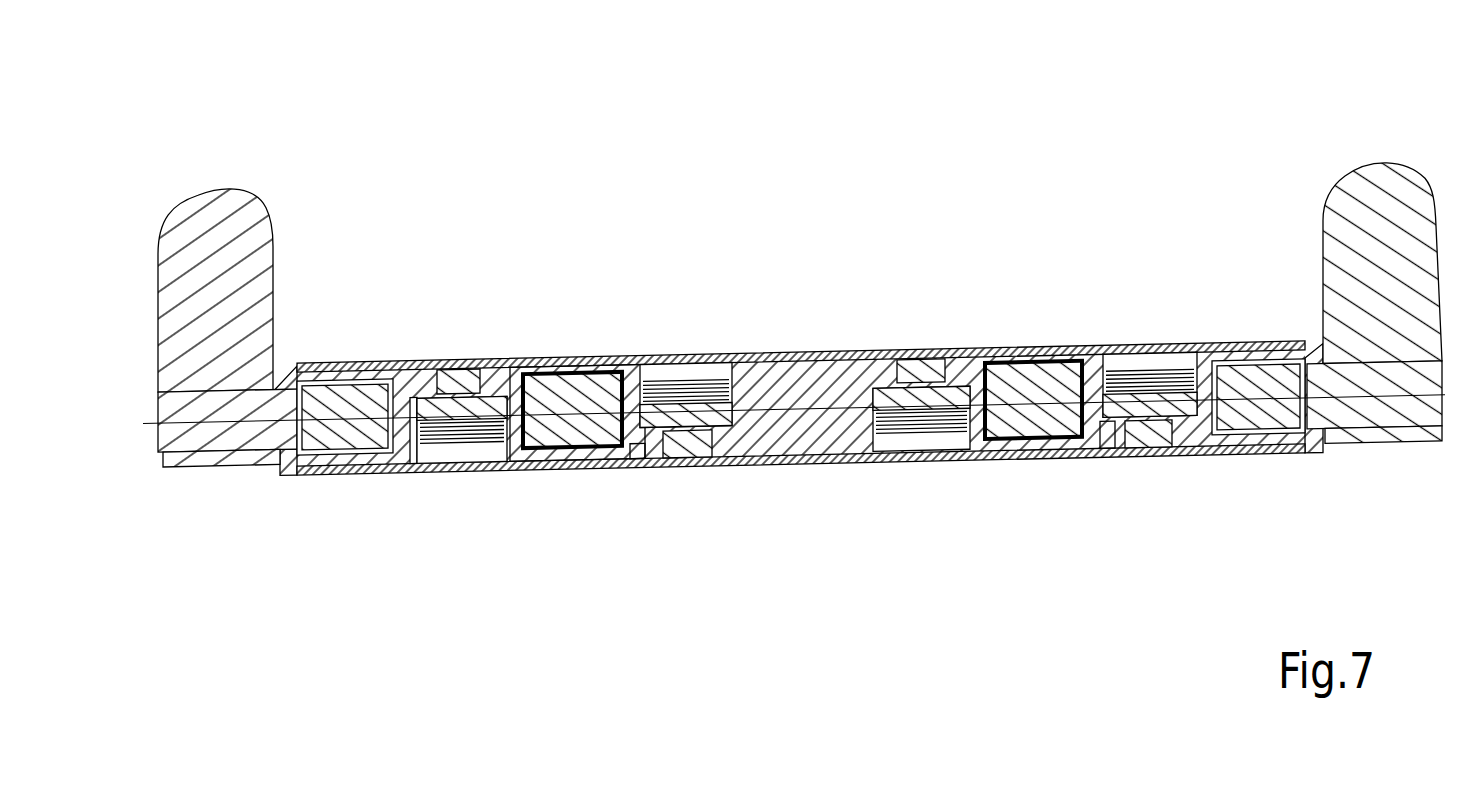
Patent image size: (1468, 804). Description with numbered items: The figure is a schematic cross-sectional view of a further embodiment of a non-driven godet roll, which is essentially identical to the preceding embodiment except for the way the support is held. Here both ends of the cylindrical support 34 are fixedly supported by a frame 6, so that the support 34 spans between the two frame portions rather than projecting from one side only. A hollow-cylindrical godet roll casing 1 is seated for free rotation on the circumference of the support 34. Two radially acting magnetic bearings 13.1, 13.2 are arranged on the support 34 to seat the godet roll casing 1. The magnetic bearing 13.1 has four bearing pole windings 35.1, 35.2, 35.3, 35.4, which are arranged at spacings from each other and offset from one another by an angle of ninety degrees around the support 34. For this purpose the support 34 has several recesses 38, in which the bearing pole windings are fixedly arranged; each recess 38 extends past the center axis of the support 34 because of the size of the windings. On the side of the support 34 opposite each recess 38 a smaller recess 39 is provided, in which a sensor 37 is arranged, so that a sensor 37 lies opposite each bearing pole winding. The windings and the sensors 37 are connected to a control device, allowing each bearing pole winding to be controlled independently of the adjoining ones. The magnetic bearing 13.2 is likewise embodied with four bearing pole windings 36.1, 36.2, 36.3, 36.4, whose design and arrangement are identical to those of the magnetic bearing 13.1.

The godet roll casing 1 is at (763, 460).
The frame 6 is at (240, 210).
The magnetic bearing 13.1 is at (1108, 428).
The magnetic bearing 13.2 is at (638, 445).
The support 34 is at (828, 440).
The bearing pole winding 35.1 is at (920, 443).
The bearing pole winding 35.2 is at (1037, 417).
The bearing pole winding 35.3 is at (1138, 360).
The bearing pole winding 35.4 is at (1262, 377).
The bearing pole winding 36.1 is at (337, 405).
The bearing pole winding 36.2 is at (463, 453).
The bearing pole winding 36.3 is at (586, 385).
The bearing pole winding 36.4 is at (684, 370).
The sensor 37 is at (455, 373).
The recess 38 is at (487, 368).
The smaller recess 39 is at (408, 452).